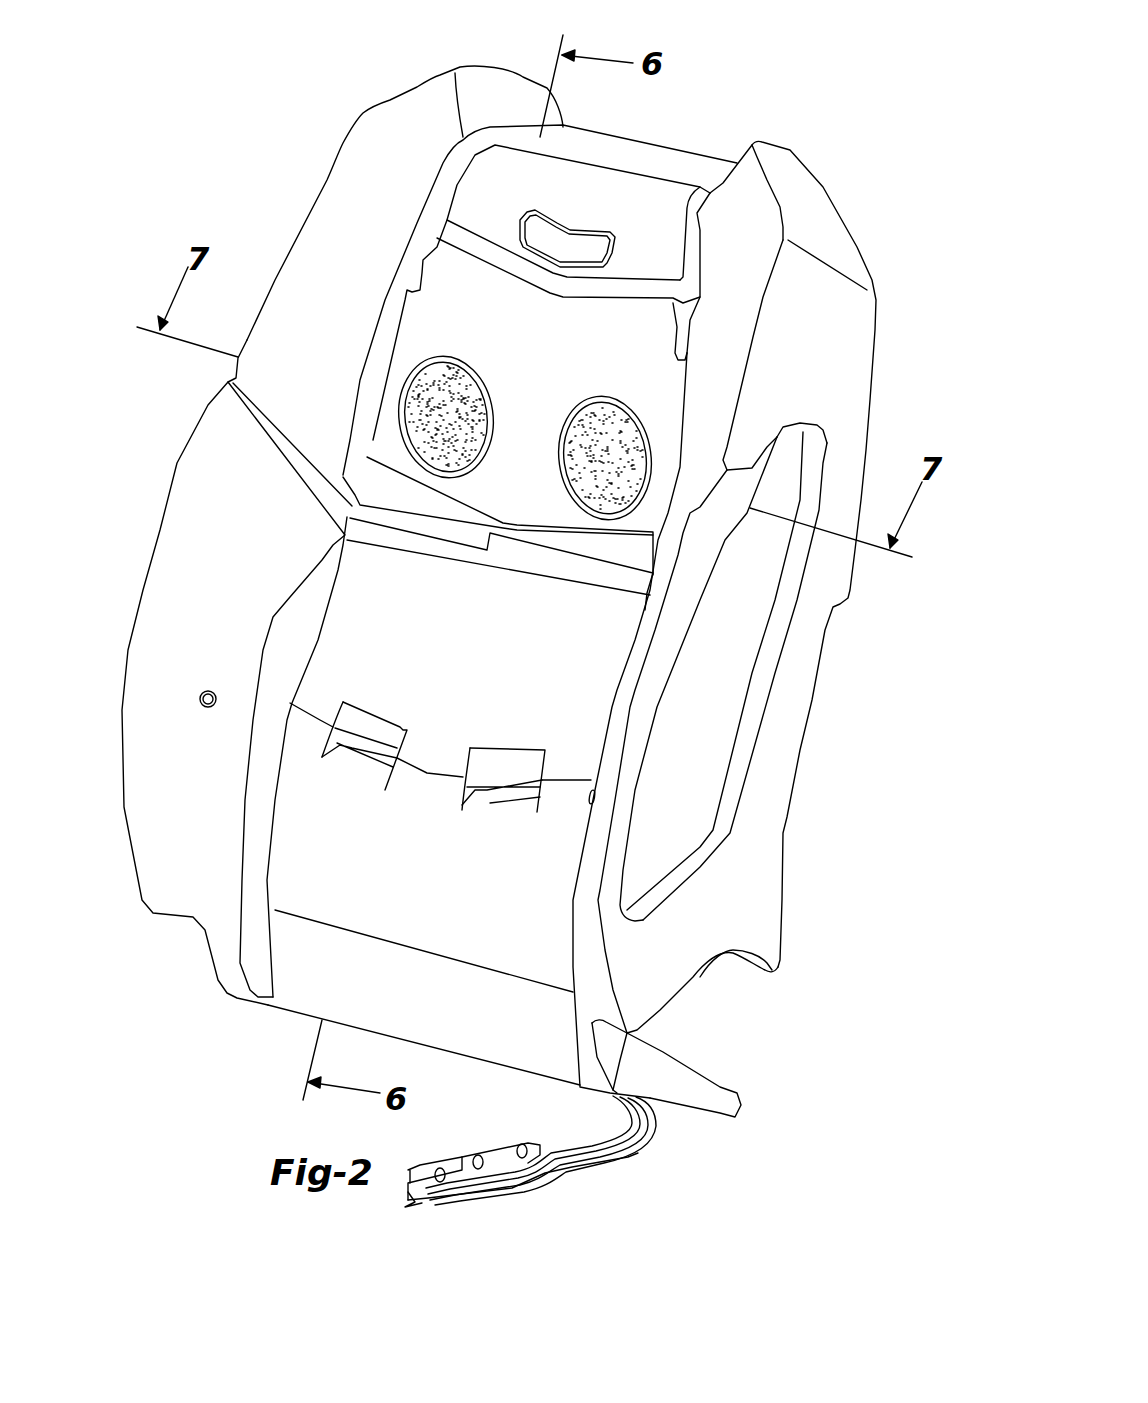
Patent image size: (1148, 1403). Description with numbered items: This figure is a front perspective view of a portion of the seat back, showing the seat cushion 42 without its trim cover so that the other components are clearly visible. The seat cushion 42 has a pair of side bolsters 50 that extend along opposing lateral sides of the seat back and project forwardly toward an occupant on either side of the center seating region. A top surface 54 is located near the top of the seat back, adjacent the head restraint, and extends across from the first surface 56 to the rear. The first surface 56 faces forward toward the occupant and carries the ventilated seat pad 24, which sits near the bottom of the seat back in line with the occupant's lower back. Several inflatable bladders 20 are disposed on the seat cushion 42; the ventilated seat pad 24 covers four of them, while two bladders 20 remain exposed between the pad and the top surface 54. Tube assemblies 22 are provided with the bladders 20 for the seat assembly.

The inflatable bladders 20 is at (560, 458).
The tube assemblies 22 is at (640, 1118).
The ventilated seat pad 24 is at (293, 892).
The seat cushion 42 is at (797, 157).
The side bolsters 50 is at (180, 478).
The top surface 54 is at (650, 150).
The first surface 56 is at (690, 380).